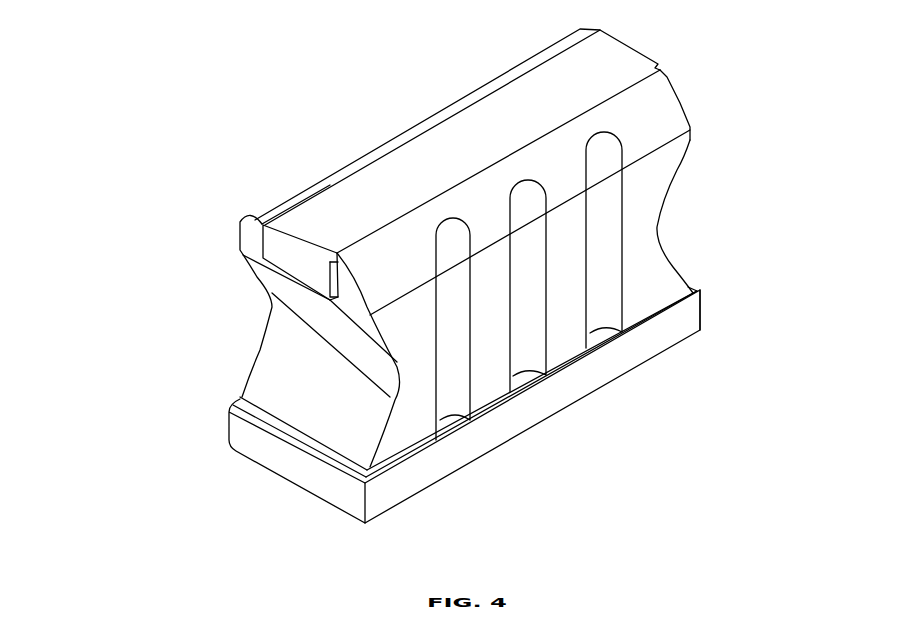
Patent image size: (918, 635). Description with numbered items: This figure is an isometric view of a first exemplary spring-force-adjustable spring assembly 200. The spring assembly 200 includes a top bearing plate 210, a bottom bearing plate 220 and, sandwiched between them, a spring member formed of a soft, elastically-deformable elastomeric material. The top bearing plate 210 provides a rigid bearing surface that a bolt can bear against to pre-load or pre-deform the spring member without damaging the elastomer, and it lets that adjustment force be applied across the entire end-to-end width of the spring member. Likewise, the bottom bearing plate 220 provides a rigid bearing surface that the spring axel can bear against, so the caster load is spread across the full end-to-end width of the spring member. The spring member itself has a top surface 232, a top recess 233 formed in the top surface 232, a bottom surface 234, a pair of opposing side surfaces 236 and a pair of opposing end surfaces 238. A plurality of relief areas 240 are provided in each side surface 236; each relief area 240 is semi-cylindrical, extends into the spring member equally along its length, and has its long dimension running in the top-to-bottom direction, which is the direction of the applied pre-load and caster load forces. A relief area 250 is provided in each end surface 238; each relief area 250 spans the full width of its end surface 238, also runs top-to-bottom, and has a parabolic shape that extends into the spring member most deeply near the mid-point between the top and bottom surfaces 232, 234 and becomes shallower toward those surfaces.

The spring-force-adjustable spring assembly 200 is at (150, 145).
The top bearing plate 210 is at (398, 170).
The bottom bearing plate 220 is at (243, 440).
The top surface 232 is at (320, 187).
The top recess 233 is at (263, 252).
The bottom surface 234 is at (672, 303).
The side surface 236 is at (670, 155).
The end surface 238 is at (242, 400).
The relief area 240 is at (599, 268).
The relief area 250 is at (283, 322).